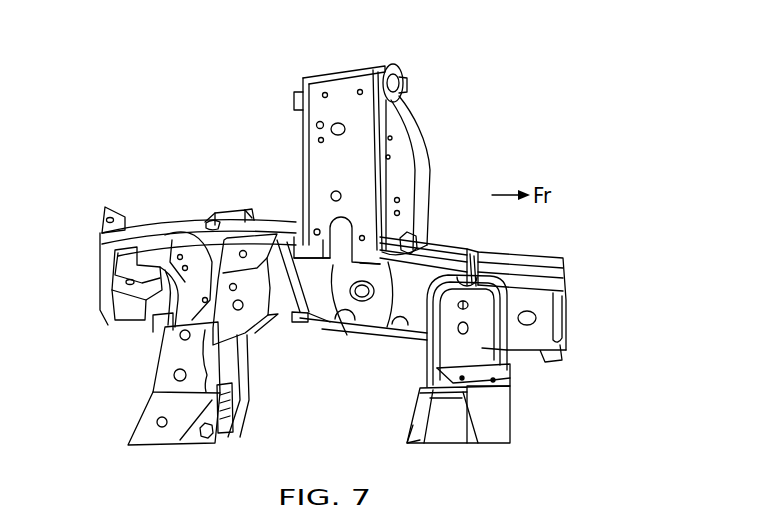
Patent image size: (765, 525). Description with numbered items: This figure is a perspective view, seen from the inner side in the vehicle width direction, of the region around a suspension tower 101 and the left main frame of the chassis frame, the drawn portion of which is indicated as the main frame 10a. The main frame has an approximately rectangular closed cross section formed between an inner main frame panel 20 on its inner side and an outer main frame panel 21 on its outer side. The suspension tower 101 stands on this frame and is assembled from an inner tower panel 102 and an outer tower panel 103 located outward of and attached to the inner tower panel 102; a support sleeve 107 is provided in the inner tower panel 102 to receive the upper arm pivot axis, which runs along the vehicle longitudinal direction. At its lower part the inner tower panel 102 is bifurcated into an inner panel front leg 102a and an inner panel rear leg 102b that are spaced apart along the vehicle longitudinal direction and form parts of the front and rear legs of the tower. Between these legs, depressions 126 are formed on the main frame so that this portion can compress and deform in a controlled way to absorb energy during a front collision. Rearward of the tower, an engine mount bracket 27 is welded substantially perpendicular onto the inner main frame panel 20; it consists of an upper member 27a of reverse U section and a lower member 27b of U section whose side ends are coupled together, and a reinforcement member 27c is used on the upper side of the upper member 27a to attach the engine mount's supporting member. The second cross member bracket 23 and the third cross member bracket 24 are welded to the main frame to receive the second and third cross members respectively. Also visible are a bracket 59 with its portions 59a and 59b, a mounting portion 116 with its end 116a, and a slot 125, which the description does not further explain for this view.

The front side frame 10a is at (507, 238).
The inner main frame panel 20 is at (539, 342).
The outer main frame panel 21 is at (562, 253).
The second cross member bracket 23 is at (532, 392).
The third cross member bracket 24 is at (135, 366).
The engine mount bracket 27 is at (247, 348).
The upper member 27a is at (272, 325).
The lower member 27b is at (283, 315).
The reinforcement member 27c is at (225, 400).
The gusset 59 is at (178, 178).
The gusset portion 59a is at (208, 270).
The gusset portion 59b is at (150, 262).
The suspension tower 101 is at (358, 50).
The inner tower panel 102 is at (320, 62).
The inner panel front leg 102a is at (383, 262).
The inner panel rear leg 102b is at (318, 262).
The outer tower panel 103 is at (441, 110).
The support sleeve 107 is at (394, 72).
The mounting portion 116 is at (240, 200).
The mounting portion end 116a is at (234, 198).
The slot 125 is at (212, 223).
The depressions 126 is at (347, 335).